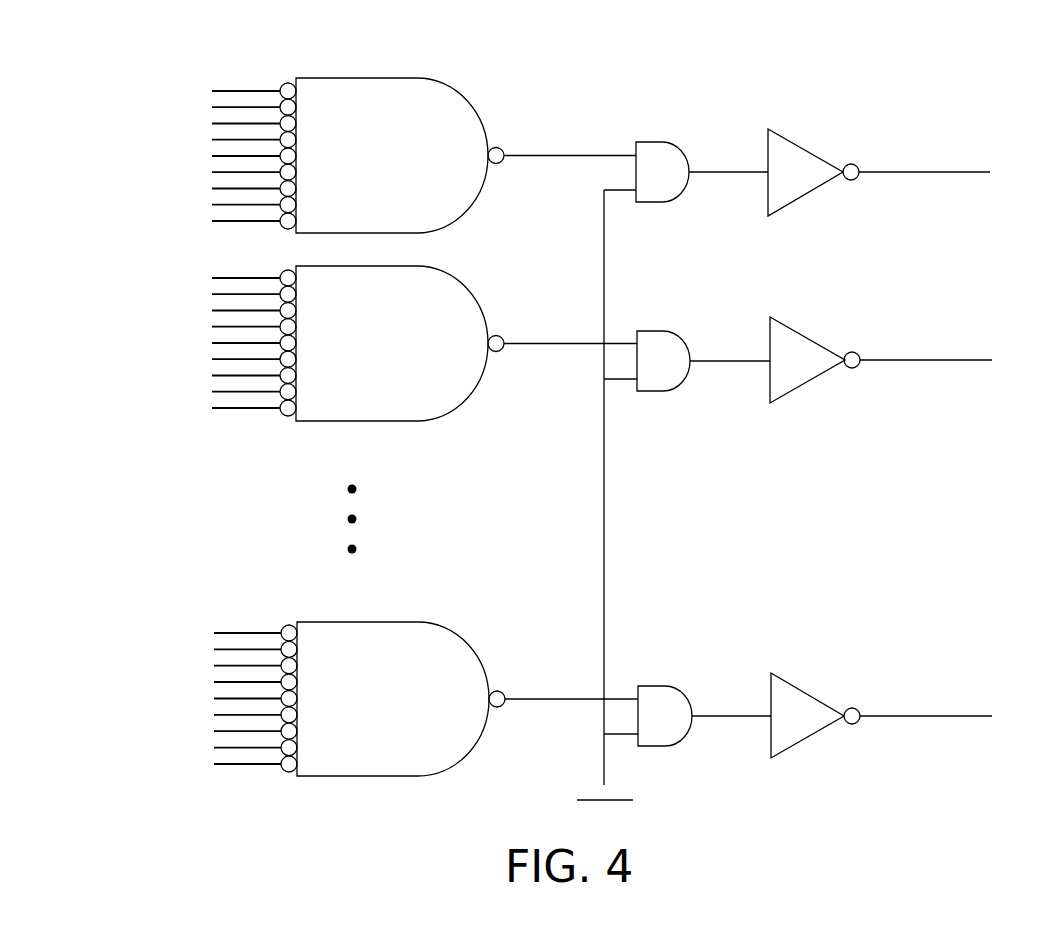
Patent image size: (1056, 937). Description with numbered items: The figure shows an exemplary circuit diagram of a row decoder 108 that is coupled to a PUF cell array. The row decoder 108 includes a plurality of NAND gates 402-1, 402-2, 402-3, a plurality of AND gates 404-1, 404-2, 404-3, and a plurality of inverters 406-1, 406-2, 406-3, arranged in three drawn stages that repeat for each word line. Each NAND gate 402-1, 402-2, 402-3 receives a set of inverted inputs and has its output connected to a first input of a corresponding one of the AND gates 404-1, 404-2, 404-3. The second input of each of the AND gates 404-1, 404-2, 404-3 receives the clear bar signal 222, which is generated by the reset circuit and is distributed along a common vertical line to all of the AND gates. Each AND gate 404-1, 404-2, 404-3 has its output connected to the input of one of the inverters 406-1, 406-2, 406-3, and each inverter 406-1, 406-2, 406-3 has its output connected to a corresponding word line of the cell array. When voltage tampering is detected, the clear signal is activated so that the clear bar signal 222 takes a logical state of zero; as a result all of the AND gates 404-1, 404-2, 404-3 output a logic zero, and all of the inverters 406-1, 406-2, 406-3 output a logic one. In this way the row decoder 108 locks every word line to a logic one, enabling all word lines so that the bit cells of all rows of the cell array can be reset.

The row decoder 108 is at (150, 64).
The NAND gate 402-1 is at (462, 98).
The NAND gate 402-2 is at (464, 400).
The NAND gate 402-3 is at (463, 641).
The AND gate 404-1 is at (660, 142).
The AND gate 404-2 is at (660, 331).
The AND gate 404-3 is at (660, 686).
The inverter 406-1 is at (812, 151).
The inverter 406-2 is at (814, 339).
The inverter 406-3 is at (814, 695).
The clear bar signal 222 is at (640, 803).